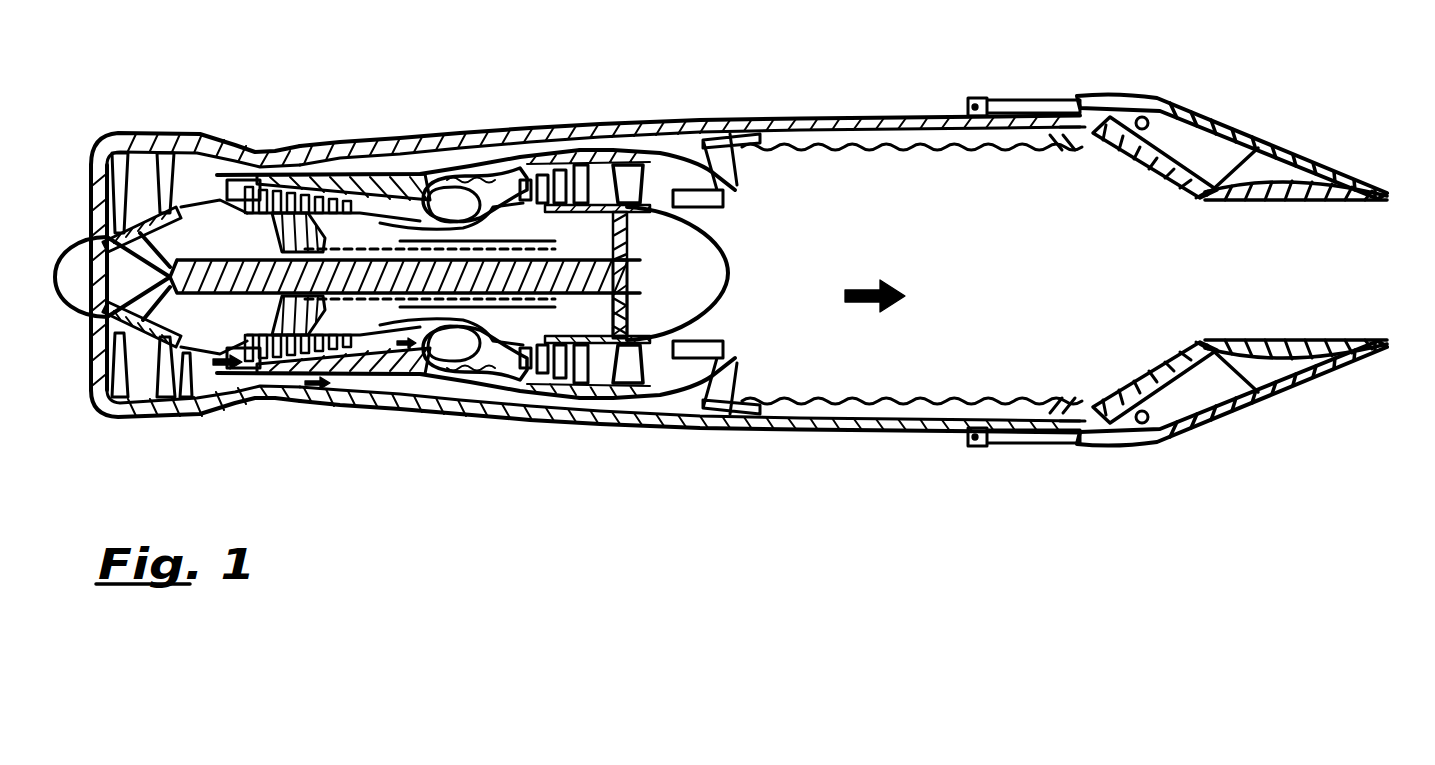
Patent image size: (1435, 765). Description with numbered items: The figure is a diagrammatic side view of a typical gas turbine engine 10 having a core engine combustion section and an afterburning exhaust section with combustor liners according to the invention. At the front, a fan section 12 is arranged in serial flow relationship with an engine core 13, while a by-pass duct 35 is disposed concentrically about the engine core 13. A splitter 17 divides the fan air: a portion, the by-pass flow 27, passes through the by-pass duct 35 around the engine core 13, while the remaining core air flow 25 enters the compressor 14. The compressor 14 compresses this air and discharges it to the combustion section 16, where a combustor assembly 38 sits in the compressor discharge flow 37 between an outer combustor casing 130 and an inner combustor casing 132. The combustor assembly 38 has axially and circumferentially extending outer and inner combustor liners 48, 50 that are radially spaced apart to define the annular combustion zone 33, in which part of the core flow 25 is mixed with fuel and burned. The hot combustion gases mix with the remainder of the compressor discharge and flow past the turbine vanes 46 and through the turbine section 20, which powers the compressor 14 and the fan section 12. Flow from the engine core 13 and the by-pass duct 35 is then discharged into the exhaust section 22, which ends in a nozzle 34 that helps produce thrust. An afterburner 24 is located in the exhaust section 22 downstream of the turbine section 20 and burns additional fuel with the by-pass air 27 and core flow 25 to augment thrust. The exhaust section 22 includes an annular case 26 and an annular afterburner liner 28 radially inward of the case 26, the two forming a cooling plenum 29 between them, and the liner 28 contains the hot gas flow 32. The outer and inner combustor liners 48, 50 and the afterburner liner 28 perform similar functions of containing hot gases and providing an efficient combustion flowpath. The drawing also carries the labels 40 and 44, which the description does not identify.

The gas turbine engine 10 is at (770, 480).
The fan section 12 is at (135, 135).
The engine core 13 is at (372, 173).
The compressor 14 is at (288, 173).
The combustion section 16 is at (478, 178).
The splitter 17 is at (248, 173).
The turbine section 20 is at (580, 152).
The exhaust section 22 is at (870, 150).
The afterburner 24 is at (762, 200).
The core air flow 25 is at (197, 388).
The annular case 26 is at (876, 118).
The by-pass flow 27 is at (313, 392).
The annular afterburner liner 28 is at (952, 150).
The cooling plenum 29 is at (1022, 150).
The gas flow 32 is at (866, 278).
The combustion zone 33 is at (468, 190).
The nozzle 34 is at (1160, 165).
The by-pass duct 35 is at (330, 160).
The compressor discharge flow 37 is at (400, 362).
The combustor assembly 38 is at (487, 363).
The turbine disk 40 is at (608, 247).
The lower nozzle flap 44 is at (1415, 270).
The turbine vanes 46 is at (552, 384).
The outer combustor liner 48 is at (520, 177).
The inner combustor liner 50 is at (490, 207).
The outer combustor casing 130 is at (478, 385).
The inner combustor casing 132 is at (490, 325).